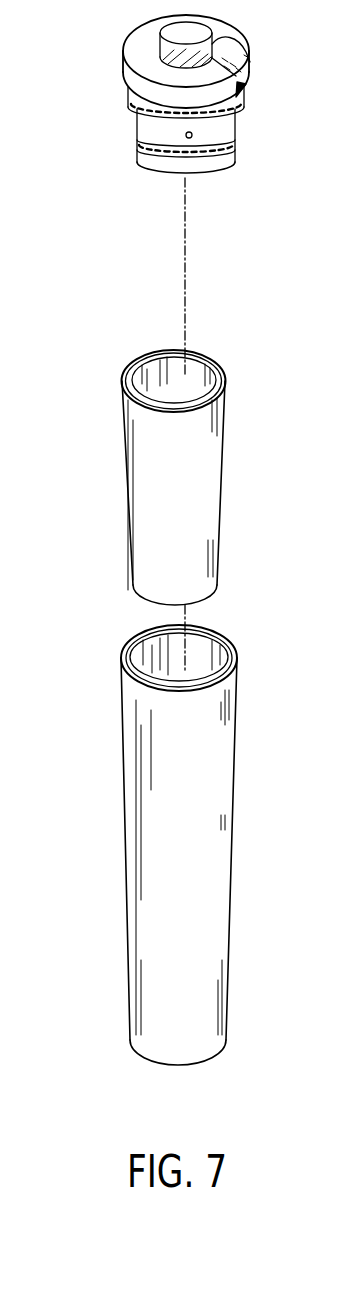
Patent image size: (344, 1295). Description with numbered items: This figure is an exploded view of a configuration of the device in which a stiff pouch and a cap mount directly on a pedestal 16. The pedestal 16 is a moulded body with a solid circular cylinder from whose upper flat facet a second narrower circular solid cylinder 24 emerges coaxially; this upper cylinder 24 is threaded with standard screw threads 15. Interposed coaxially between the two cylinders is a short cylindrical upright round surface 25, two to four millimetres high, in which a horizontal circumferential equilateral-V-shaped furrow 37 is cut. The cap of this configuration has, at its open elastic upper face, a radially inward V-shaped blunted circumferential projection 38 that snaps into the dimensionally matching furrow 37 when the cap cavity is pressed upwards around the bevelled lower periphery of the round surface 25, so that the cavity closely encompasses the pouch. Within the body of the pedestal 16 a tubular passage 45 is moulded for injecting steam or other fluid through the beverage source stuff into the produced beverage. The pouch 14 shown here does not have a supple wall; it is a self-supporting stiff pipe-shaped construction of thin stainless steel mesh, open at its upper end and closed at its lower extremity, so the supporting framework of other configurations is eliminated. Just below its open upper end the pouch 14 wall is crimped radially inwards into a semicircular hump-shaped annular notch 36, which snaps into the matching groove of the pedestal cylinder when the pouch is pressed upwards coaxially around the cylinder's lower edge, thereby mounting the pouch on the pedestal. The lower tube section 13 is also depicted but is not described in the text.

The lower tube section 13 is at (141, 838).
The pouch 14 is at (136, 477).
The screw threads 15 is at (240, 79).
The pedestal 16 is at (121, 52).
The second narrower circular solid cylinder 24 is at (250, 58).
The round surface 25 is at (125, 82).
The annular notch 36 is at (124, 393).
The furrow 37 is at (160, 111).
The projection 38 is at (128, 678).
The tubular passage 45 is at (193, 135).